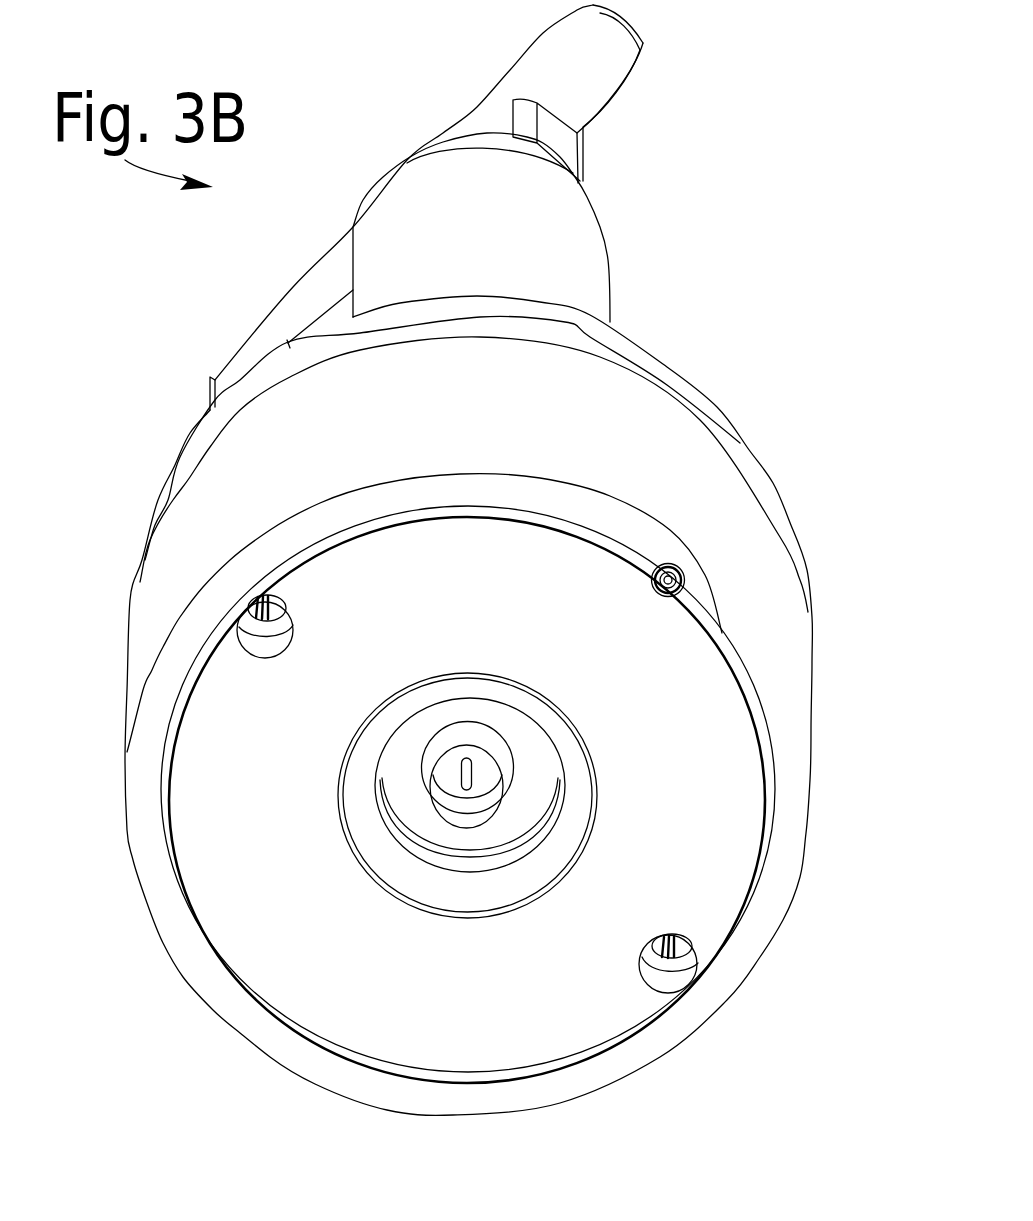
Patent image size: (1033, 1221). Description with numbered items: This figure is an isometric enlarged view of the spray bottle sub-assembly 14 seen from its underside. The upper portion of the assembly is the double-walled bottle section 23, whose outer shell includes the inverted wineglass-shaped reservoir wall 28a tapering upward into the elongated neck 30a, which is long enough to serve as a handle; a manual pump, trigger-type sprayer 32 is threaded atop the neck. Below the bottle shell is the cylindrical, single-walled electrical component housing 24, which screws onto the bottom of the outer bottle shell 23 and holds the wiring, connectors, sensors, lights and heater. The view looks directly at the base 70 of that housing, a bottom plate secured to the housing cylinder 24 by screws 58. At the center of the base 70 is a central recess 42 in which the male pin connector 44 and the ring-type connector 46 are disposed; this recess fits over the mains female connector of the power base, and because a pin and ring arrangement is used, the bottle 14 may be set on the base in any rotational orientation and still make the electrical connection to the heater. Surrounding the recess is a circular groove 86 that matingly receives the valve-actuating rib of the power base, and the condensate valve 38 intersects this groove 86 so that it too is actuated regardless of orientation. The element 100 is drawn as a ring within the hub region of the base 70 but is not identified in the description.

The bottle assembly 14 is at (208, 323).
The double-walled bottle section 23 is at (752, 442).
The electrical component housing 24 is at (655, 472).
The wineglass shape 28a is at (682, 372).
The neck 30a is at (597, 287).
The trigger-type sprayer 32 is at (473, 116).
The condensate valve 38 is at (690, 583).
The central recess 42 is at (400, 755).
The male pin connector 44 is at (478, 770).
The ring-type connector 46 is at (500, 807).
The screws 58 is at (287, 613).
The base 70 is at (530, 642).
The circular groove 86 is at (738, 673).
The inner ring 100 is at (570, 757).